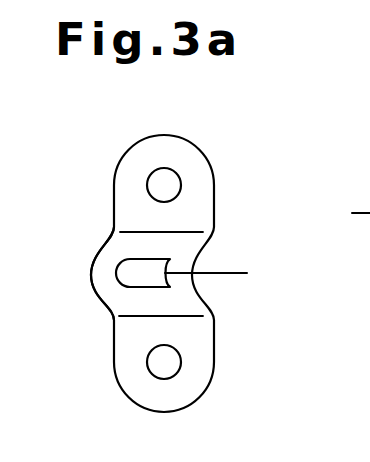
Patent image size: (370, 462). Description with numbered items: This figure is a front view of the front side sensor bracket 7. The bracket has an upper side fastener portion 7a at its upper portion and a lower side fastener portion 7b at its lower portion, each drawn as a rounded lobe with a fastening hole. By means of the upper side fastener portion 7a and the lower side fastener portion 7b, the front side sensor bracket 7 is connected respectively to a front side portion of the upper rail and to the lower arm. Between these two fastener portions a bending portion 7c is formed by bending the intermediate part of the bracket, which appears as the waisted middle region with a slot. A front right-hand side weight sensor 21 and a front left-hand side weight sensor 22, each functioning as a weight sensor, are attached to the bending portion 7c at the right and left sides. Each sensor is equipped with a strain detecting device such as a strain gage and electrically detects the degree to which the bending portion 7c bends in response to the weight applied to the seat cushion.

The front side sensor bracket 7 is at (229, 181).
The upper side fastener portion 7a is at (207, 207).
The lower side fastener portion 7b is at (208, 345).
The bending portion 7c is at (97, 283).
The front left-hand side weight sensor 22 is at (163, 258).
The front right-hand side weight sensor 21 is at (247, 252).